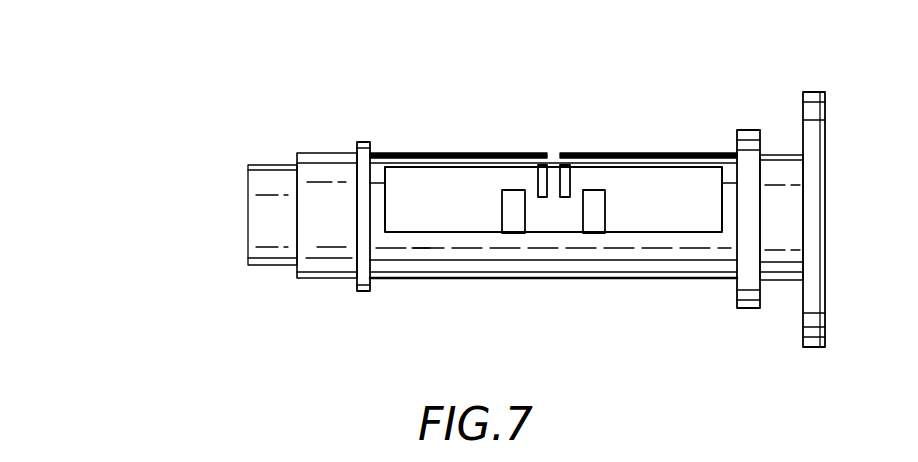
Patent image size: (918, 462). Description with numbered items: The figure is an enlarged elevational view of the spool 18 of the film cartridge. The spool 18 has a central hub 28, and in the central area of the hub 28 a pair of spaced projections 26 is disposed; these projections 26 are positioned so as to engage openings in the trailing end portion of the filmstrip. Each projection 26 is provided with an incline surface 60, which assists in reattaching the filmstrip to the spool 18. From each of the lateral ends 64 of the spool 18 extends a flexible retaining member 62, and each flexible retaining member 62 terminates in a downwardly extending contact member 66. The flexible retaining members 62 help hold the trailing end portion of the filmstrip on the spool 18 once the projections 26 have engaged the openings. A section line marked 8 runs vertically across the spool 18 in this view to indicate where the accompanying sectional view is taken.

The section line 8- 8 is at (465, 382).
The spool 18 is at (262, 79).
The projections 26 is at (502, 215).
The hub 28 is at (406, 280).
The incline surface 60 is at (510, 225).
The flexible retaining members 62 is at (447, 154).
The lateral ends 64 is at (377, 155).
The contact members 66 is at (496, 158).